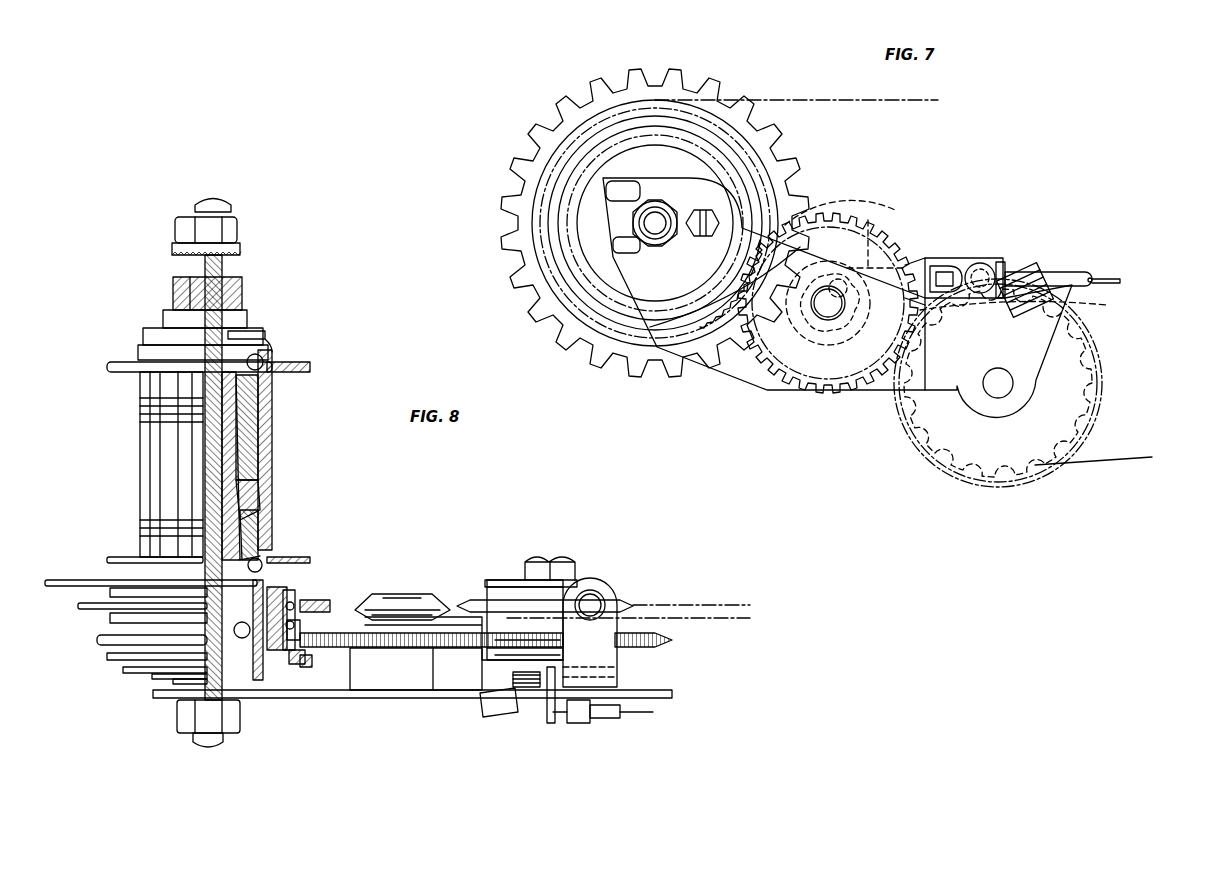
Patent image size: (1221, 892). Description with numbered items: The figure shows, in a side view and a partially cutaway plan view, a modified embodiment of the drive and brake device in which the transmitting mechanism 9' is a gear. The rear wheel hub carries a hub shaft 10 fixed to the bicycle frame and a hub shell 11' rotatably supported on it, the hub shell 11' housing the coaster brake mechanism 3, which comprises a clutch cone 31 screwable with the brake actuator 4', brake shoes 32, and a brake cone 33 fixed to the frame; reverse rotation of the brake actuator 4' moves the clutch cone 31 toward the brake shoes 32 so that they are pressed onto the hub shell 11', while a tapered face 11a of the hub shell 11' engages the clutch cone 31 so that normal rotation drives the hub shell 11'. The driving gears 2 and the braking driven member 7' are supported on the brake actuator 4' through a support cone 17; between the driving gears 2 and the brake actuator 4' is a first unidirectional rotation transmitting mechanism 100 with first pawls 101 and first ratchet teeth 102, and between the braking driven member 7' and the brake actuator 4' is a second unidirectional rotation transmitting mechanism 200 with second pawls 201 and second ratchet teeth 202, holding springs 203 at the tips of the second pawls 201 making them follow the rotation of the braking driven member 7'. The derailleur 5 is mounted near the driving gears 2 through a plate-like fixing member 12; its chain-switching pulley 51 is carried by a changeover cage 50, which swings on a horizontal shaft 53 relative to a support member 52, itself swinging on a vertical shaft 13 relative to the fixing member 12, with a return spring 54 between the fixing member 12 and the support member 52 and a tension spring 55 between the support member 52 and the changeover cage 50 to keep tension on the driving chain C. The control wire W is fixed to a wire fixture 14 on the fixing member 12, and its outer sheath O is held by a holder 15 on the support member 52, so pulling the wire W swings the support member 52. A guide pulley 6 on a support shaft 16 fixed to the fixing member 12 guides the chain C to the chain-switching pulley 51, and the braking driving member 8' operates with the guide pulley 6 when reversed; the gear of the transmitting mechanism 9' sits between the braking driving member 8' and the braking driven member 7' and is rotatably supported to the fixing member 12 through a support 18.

In FIG. 7, the driving gears 2 is at (767, 140).
In FIG. 8, the driving gears 2 is at (330, 590).
In FIG. 8, the coaster brake mechanism 3 is at (262, 440).
In FIG. 8, the brake actuator 4' is at (277, 549).
In FIG. 7, the derailleur 5 is at (915, 258).
In FIG. 8, the derailleur 5 is at (424, 594).
In FIG. 7, the guide pulley 6 is at (948, 432).
In FIG. 8, the guide pulley 6 is at (472, 600).
In FIG. 7, the braking driven member 7' is at (765, 242).
In FIG. 8, the braking driven member 7' is at (285, 638).
In FIG. 7, the braking driving member 8' is at (989, 383).
In FIG. 8, the braking driving member 8' is at (683, 646).
In FIG. 7, the transmitting mechanism 9' is at (828, 287).
In FIG. 8, the transmitting mechanism 9' is at (486, 696).
In FIG. 7, the hub shaft 10 is at (663, 236).
In FIG. 8, the hub shaft 10 is at (225, 290).
In FIG. 8, the hub shell 11' is at (216, 456).
In FIG. 8, the tapered face 11a is at (272, 487).
In FIG. 7, the fixing member 12 is at (753, 375).
In FIG. 8, the fixing member 12 is at (465, 700).
In FIG. 7, the vertical shaft 13 is at (1070, 275).
In FIG. 8, the vertical shaft 13 is at (598, 600).
In FIG. 7, the wire fixture 14 is at (940, 278).
In FIG. 8, the wire fixture 14 is at (492, 716).
In FIG. 7, the holder 15 is at (1036, 262).
In FIG. 8, the holder 15 is at (580, 725).
In FIG. 7, the support shaft 16 is at (995, 397).
In FIG. 8, the support shaft 16 is at (548, 565).
In FIG. 8, the support cone 17 is at (260, 683).
In FIG. 8, the support 18 is at (383, 700).
In FIG. 8, the clutch cone 31 is at (258, 455).
In FIG. 8, the brake shoes 32 is at (272, 415).
In FIG. 8, the brake cone 33 is at (262, 378).
In FIG. 7, the changeover cage 50 is at (848, 203).
In FIG. 8, the changeover cage 50 is at (442, 618).
In FIG. 7, the chain-switching pulley 51 is at (890, 232).
In FIG. 8, the chain-switching pulley 51 is at (397, 610).
In FIG. 7, the support member 52 is at (1003, 280).
In FIG. 8, the support member 52 is at (618, 680).
In FIG. 7, the horizontal shaft 53 is at (981, 263).
In FIG. 8, the horizontal shaft 53 is at (523, 637).
In FIG. 7, the return spring 54 is at (1026, 307).
In FIG. 7, the tension spring 55 is at (990, 270).
In FIG. 8, the tension spring 55 is at (525, 690).
In FIG. 8, the first unidirectional rotation transmitting mechanism 100 is at (378, 522).
In FIG. 8, the first pawls 101 is at (300, 588).
In FIG. 8, the first ratchet teeth 102 is at (305, 600).
In FIG. 8, the second unidirectional rotation transmitting mechanism 200 is at (348, 718).
In FIG. 8, the second pawls 201 is at (300, 665).
In FIG. 8, the second ratchet teeth 202 is at (296, 642).
In FIG. 8, the holding springs 203 is at (283, 655).
In FIG. 7, the driving chain C is at (875, 100).
In FIG. 8, the driving chain C is at (683, 608).
In FIG. 7, the outer sheath O is at (1096, 278).
In FIG. 8, the outer sheath O is at (618, 718).
In FIG. 7, the control wire W is at (1115, 278).
In FIG. 8, the control wire W is at (551, 725).